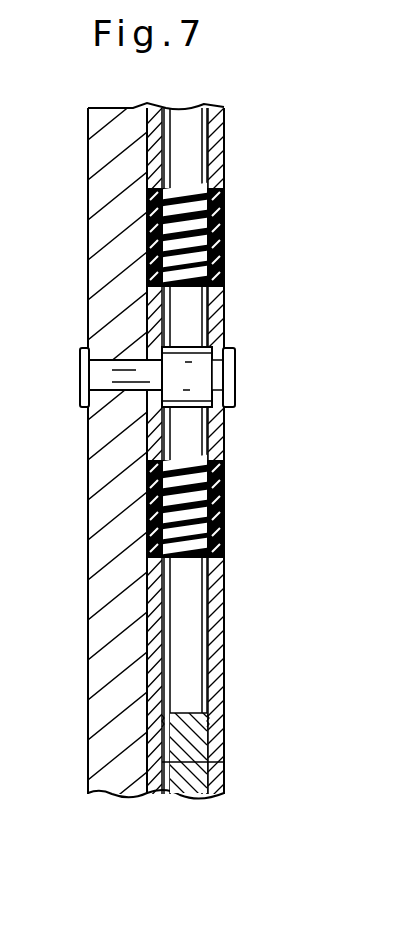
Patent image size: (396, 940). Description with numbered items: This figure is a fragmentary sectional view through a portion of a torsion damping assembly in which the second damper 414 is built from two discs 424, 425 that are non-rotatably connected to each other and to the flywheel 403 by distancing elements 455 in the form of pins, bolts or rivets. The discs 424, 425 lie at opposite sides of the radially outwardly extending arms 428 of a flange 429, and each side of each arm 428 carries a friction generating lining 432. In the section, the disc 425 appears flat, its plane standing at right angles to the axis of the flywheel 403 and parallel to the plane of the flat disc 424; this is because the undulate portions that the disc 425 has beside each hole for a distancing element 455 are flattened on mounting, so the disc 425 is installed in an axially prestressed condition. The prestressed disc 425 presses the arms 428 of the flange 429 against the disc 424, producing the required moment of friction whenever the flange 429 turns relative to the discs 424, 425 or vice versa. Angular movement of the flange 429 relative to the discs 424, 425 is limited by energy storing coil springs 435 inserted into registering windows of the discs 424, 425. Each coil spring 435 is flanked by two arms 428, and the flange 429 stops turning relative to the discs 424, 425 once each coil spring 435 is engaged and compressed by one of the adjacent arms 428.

The flywheel 403 is at (102, 188).
The disc 424 is at (152, 640).
The flange 429 is at (196, 584).
The coil spring 435 is at (226, 464).
The distancing element 455 is at (198, 376).
The second damper 414 is at (250, 613).
The arm 428 is at (186, 718).
The disc 425 is at (226, 723).
The friction generating lining 432 is at (222, 771).